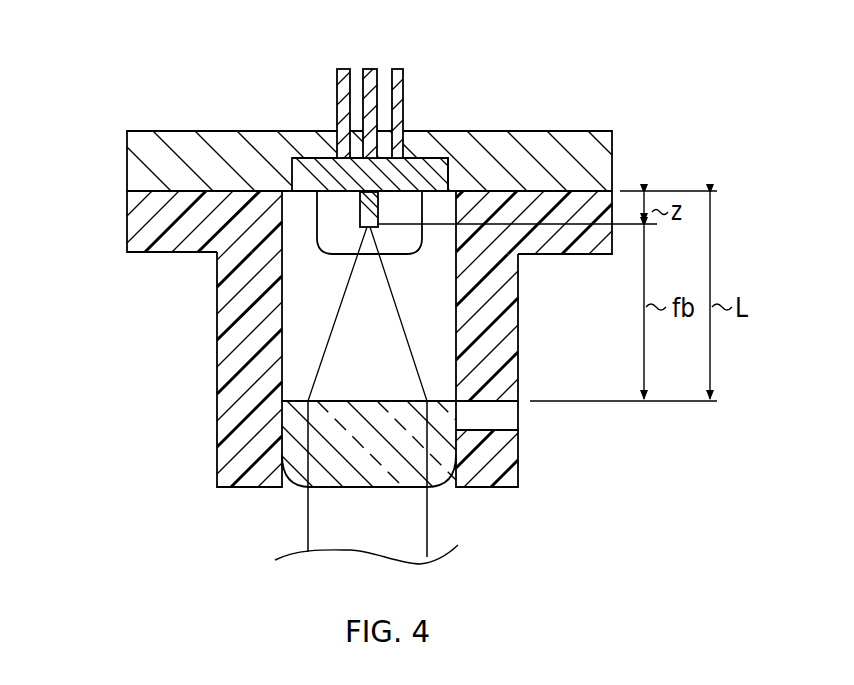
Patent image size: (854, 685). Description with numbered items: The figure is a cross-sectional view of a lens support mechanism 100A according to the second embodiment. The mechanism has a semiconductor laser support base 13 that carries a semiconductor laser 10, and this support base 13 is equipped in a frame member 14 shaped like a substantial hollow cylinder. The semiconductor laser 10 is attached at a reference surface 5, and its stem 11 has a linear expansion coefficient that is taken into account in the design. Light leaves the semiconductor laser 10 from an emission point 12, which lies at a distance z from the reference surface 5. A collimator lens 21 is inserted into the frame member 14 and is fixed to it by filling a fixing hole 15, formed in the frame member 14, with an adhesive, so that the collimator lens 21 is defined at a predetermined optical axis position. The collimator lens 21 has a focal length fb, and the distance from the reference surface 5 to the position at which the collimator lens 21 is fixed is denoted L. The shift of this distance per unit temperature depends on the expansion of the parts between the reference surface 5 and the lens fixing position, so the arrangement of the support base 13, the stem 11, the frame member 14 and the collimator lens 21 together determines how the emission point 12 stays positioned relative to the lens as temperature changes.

The lens support mechanism 100A is at (710, 35).
The semiconductor laser support base 13 is at (186, 138).
The reference surface 5 is at (140, 183).
The frame member 14 is at (228, 403).
The fixing hole 15 is at (508, 420).
The semiconductor laser 10 is at (423, 166).
The stem 11 is at (357, 203).
The emission point 12 is at (360, 223).
The collimator lens 21 is at (293, 454).